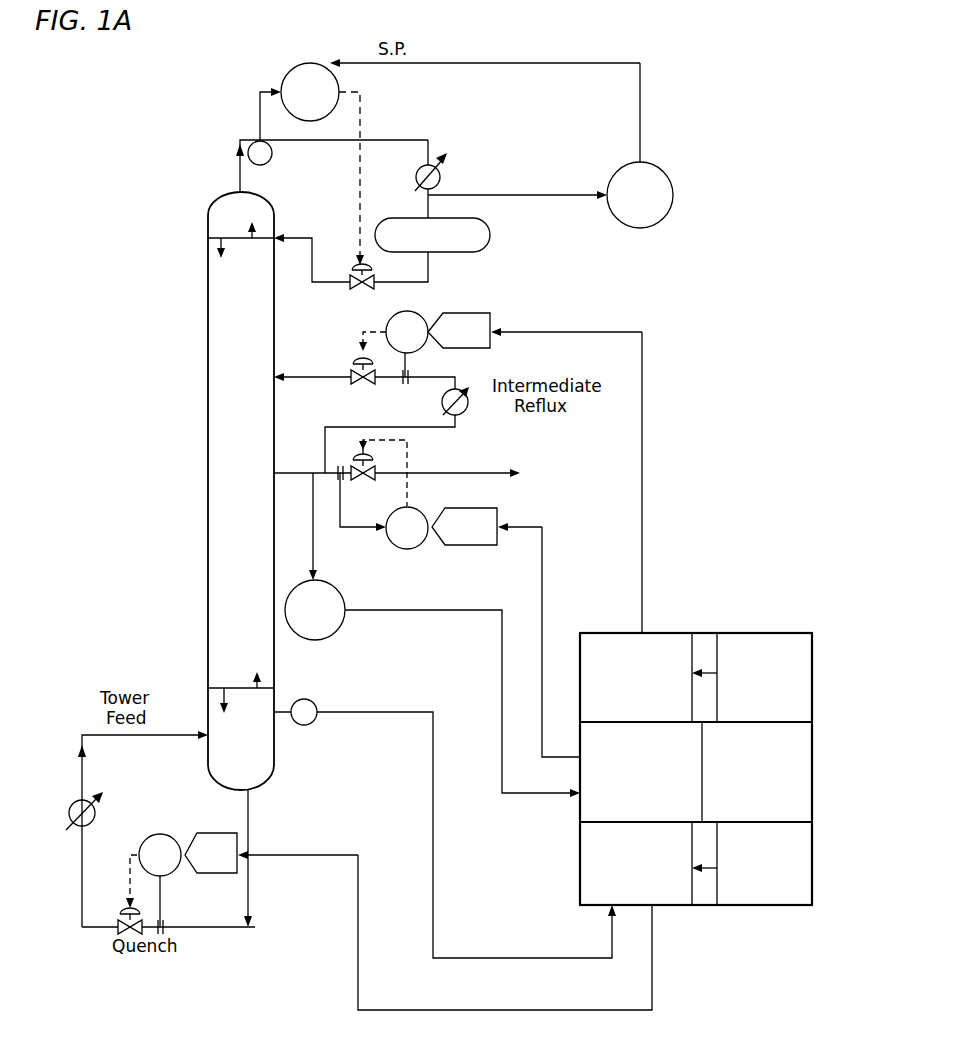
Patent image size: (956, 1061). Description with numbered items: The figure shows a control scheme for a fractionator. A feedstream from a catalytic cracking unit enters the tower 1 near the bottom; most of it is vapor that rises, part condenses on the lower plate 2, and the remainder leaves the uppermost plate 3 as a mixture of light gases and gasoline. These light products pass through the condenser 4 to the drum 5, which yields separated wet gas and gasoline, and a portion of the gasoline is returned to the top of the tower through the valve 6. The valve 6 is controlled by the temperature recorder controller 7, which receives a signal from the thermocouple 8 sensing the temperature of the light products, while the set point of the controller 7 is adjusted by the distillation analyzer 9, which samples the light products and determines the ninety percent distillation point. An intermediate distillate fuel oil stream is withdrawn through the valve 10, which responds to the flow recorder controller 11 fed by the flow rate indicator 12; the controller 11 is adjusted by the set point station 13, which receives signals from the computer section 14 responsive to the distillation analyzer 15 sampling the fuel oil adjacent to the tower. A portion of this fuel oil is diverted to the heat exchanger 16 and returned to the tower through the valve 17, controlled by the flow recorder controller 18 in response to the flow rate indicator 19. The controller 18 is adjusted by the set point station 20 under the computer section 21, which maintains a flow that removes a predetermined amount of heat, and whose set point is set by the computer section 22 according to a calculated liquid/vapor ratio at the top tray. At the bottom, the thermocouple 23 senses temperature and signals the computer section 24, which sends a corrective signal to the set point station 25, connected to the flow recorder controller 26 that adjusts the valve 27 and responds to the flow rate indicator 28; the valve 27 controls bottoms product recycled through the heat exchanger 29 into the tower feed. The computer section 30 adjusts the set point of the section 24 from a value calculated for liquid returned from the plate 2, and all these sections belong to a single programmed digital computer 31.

The tower 1 is at (208, 536).
The lower plate 2 is at (233, 688).
The uppermost plate 3 is at (226, 238).
The condenser 4 is at (437, 150).
The drum 5 is at (432, 235).
The valve 6 is at (352, 290).
The temperature recorder controller 7 is at (300, 66).
The thermocouple 8 is at (271, 158).
The distillation analyzer 9 is at (667, 176).
The valve 10 is at (355, 456).
The flow recorder controller 11 is at (413, 549).
The flow rate indicator 12 is at (338, 478).
The set point station 13 is at (474, 545).
The computer section 14 is at (650, 772).
The distillation analyzer 15 is at (337, 630).
The heat exchanger 16 is at (465, 412).
The valve 17 is at (356, 384).
The flow recorder controller 18 is at (425, 318).
The flow rate indicator 19 is at (407, 382).
The set point station 20 is at (470, 313).
The computer section 21 is at (657, 677).
The computer section 22 is at (801, 641).
The thermocouple 23 is at (314, 722).
The computer section 24 is at (580, 872).
The set point station 25 is at (221, 833).
The flow recorder controller 26 is at (156, 836).
The valve 27 is at (124, 920).
The flow rate indicator 28 is at (166, 930).
The heat exchanger 29 is at (71, 806).
The computer section 30 is at (768, 801).
The digital computer 31 is at (727, 630).